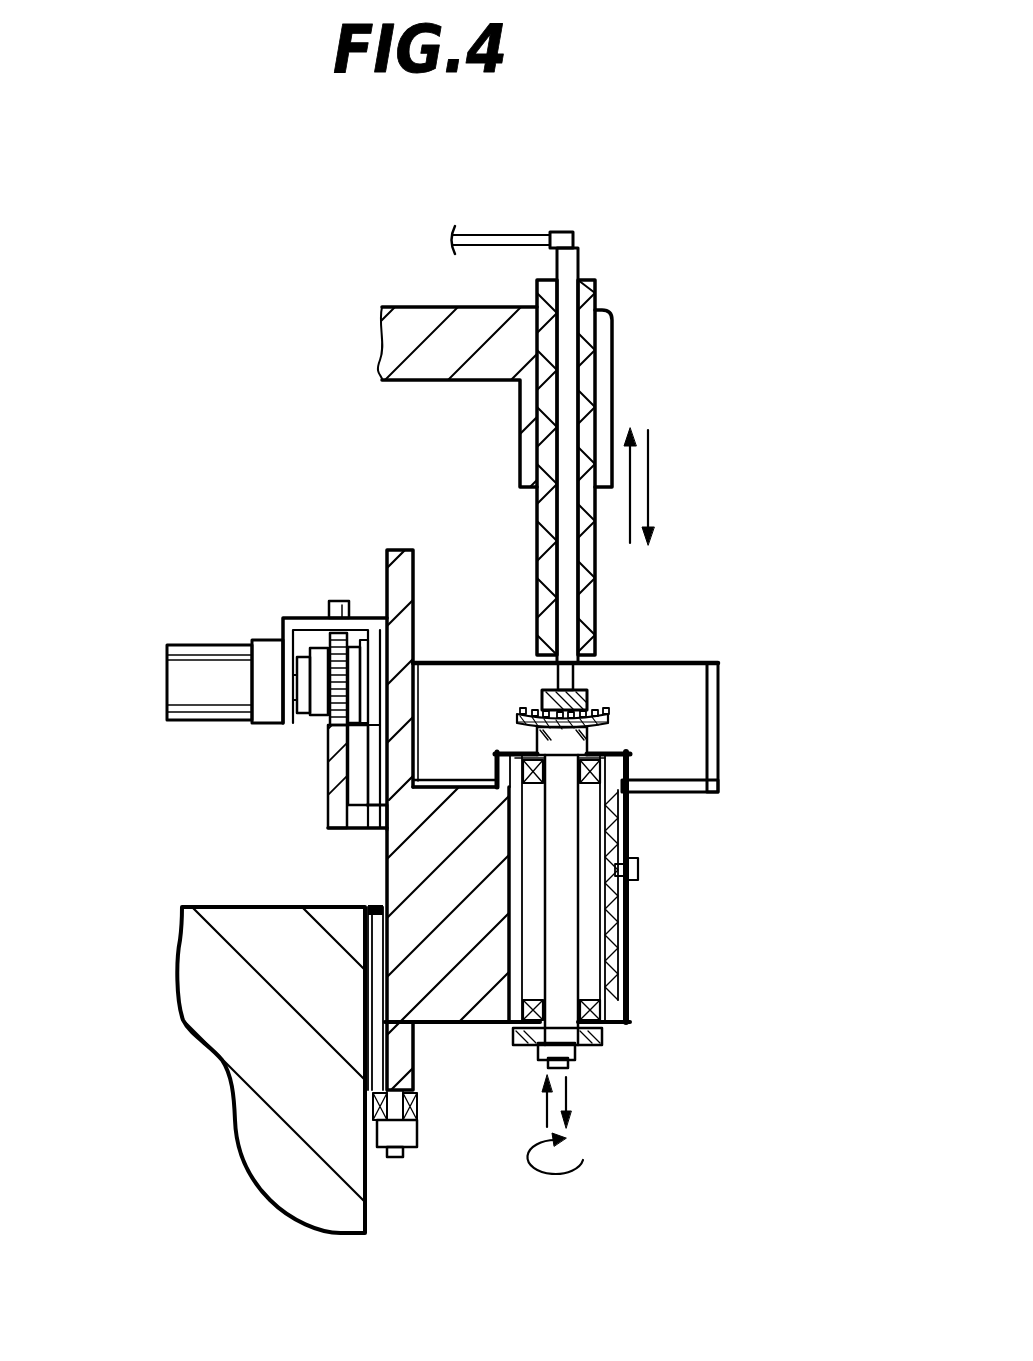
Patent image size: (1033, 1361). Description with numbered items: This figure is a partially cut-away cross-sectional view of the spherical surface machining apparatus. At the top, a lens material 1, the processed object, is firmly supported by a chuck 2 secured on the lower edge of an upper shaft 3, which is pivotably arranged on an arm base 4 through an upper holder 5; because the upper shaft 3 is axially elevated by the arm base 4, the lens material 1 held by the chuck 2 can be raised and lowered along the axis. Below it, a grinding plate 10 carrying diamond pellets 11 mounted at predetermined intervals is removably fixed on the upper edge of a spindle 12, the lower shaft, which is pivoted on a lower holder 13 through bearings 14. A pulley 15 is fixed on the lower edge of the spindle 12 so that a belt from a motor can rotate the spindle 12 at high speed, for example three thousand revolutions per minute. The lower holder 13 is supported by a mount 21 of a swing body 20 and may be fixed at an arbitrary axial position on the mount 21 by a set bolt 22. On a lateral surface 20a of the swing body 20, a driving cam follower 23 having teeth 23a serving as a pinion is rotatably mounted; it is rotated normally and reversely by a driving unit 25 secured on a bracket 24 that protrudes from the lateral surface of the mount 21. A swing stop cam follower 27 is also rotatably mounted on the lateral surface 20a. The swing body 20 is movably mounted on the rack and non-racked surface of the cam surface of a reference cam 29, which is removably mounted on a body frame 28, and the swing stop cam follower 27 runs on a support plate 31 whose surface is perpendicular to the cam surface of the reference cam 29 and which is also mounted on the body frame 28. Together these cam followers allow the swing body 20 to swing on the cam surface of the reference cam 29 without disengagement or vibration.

The lens material 1 is at (588, 708).
The chuck 2 is at (578, 700).
The upper shaft 3 is at (568, 290).
The arm base 4 is at (432, 344).
The upper holder 5 is at (583, 373).
The grinding plate 10 is at (588, 741).
The diamond pellets 11 is at (592, 715).
The spindle 12 is at (563, 918).
The lower holder 13 is at (637, 980).
The bearings 14 is at (533, 762).
The pulley 15 is at (591, 1046).
The swing body 20 is at (404, 550).
The lateral surface 20a is at (335, 829).
The mount 21 is at (447, 1024).
The set bolt 22 is at (638, 867).
The driving cam follower 23 is at (316, 722).
The teeth 23a is at (332, 727).
The bracket 24 is at (374, 623).
The driving unit 25 is at (203, 668).
The swing stop cam follower 27 is at (416, 1106).
The body frame 28 is at (281, 1176).
The reference cam 29 is at (340, 603).
The support plate 31 is at (367, 1023).